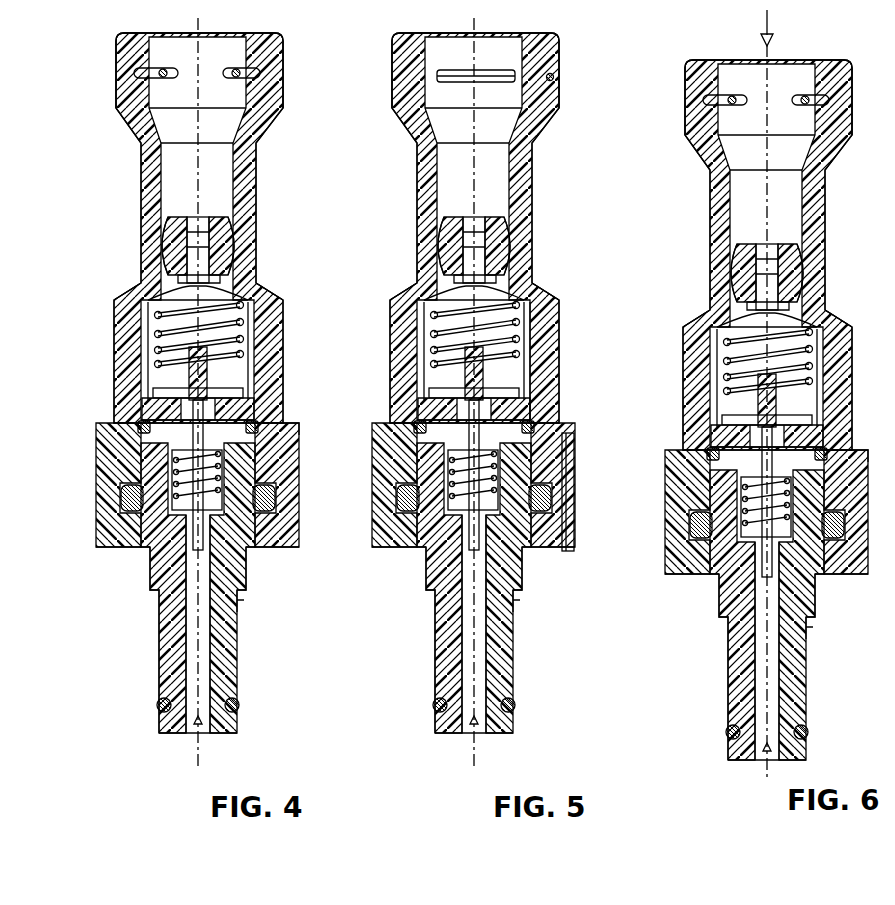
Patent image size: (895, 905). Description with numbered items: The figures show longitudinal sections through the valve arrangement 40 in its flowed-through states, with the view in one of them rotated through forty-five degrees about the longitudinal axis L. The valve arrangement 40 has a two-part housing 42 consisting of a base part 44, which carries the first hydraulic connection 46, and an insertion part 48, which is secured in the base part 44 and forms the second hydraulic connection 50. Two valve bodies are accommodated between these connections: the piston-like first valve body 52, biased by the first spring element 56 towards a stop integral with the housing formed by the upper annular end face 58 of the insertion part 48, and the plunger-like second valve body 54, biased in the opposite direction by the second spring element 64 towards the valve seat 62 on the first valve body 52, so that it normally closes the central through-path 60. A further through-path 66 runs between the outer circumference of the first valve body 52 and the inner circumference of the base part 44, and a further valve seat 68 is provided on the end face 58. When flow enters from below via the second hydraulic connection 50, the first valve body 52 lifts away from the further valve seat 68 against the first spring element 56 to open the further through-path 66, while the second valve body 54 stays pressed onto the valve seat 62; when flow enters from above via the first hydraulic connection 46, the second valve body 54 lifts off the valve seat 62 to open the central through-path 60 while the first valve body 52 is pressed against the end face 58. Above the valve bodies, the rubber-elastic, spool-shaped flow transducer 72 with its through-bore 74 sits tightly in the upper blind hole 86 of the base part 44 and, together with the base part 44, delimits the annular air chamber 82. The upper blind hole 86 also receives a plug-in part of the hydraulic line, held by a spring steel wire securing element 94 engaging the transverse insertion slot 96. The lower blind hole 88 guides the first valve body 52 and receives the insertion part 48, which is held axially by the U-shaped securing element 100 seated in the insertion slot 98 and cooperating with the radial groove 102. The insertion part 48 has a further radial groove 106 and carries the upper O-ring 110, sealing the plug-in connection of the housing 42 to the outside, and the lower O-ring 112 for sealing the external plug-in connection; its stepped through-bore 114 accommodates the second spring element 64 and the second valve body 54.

In FIG. 4, the valve arrangement 40 is at (212, 228).
In FIG. 5, the valve arrangement 40 is at (488, 228).
In FIG. 6, the valve arrangement 40 is at (784, 255).
In FIG. 4, the housing 42 is at (182, 260).
In FIG. 5, the housing 42 is at (460, 260).
In FIG. 6, the housing 42 is at (748, 288).
In FIG. 4, the base part 44 is at (183, 228).
In FIG. 5, the base part 44 is at (462, 228).
In FIG. 6, the base part 44 is at (748, 255).
In FIG. 4, the first hydraulic connection 46 is at (217, 63).
In FIG. 5, the first hydraulic connection 46 is at (493, 63).
In FIG. 6, the first hydraulic connection 46 is at (779, 76).
In FIG. 4, the insertion part 48 is at (130, 640).
In FIG. 5, the insertion part 48 is at (410, 640).
In FIG. 6, the insertion part 48 is at (699, 667).
In FIG. 4, the second hydraulic connection 50 is at (183, 741).
In FIG. 5, the second hydraulic connection 50 is at (461, 740).
In FIG. 6, the second hydraulic connection 50 is at (748, 767).
In FIG. 4, the first valve body 52 is at (155, 335).
In FIG. 5, the first valve body 52 is at (432, 335).
In FIG. 6, the first valve body 52 is at (724, 362).
In FIG. 4, the second valve body 54 is at (179, 476).
In FIG. 5, the second valve body 54 is at (460, 471).
In FIG. 6, the second valve body 54 is at (749, 512).
In FIG. 4, the first spring element 56 is at (162, 341).
In FIG. 5, the first spring element 56 is at (441, 343).
In FIG. 6, the first spring element 56 is at (729, 367).
In FIG. 4, the end face 58 is at (226, 406).
In FIG. 5, the end face 58 is at (509, 406).
In FIG. 6, the end face 58 is at (800, 433).
In FIG. 4, the central through-path 60 is at (137, 373).
In FIG. 5, the central through-path 60 is at (531, 373).
In FIG. 6, the central through-path 60 is at (707, 409).
In FIG. 4, the valve seat 62 is at (232, 379).
In FIG. 5, the valve seat 62 is at (433, 383).
In FIG. 6, the valve seat 62 is at (721, 444).
In FIG. 4, the second spring element 64 is at (184, 588).
In FIG. 5, the second spring element 64 is at (458, 588).
In FIG. 6, the second spring element 64 is at (752, 615).
In FIG. 5, the further through-path 66 is at (562, 361).
In FIG. 4, the further valve seat 68 is at (158, 447).
In FIG. 5, the further valve seat 68 is at (439, 436).
In FIG. 6, the further valve seat 68 is at (795, 426).
In FIG. 4, the flow transducer 72 is at (230, 246).
In FIG. 5, the flow transducer 72 is at (505, 246).
In FIG. 6, the flow transducer 72 is at (798, 273).
In FIG. 4, the through-bore 74 is at (188, 228).
In FIG. 5, the through-bore 74 is at (464, 228).
In FIG. 6, the through-bore 74 is at (756, 251).
In FIG. 4, the annular air chamber 82 is at (230, 246).
In FIG. 5, the annular air chamber 82 is at (474, 224).
In FIG. 6, the annular air chamber 82 is at (767, 247).
In FIG. 4, the upper blind hole 86 is at (197, 125).
In FIG. 5, the upper blind hole 86 is at (473, 125).
In FIG. 6, the upper blind hole 86 is at (766, 152).
In FIG. 4, the lower blind hole 88 is at (259, 569).
In FIG. 5, the lower blind hole 88 is at (538, 569).
In FIG. 6, the lower blind hole 88 is at (828, 595).
In FIG. 4, the securing element 94 is at (163, 58).
In FIG. 5, the securing element 94 is at (574, 64).
In FIG. 6, the securing element 94 is at (838, 81).
In FIG. 4, the insertion slot 96 is at (233, 58).
In FIG. 5, the insertion slot 96 is at (476, 60).
In FIG. 6, the insertion slot 96 is at (726, 89).
In FIG. 4, the insertion slot 98 is at (288, 497).
In FIG. 5, the insertion slot 98 is at (540, 498).
In FIG. 6, the insertion slot 98 is at (858, 518).
In FIG. 4, the securing element 100 is at (214, 530).
In FIG. 5, the securing element 100 is at (454, 543).
In FIG. 6, the securing element 100 is at (739, 545).
In FIG. 4, the radial groove 102 is at (96, 497).
In FIG. 5, the radial groove 102 is at (505, 528).
In FIG. 6, the radial groove 102 is at (663, 559).
In FIG. 4, the radial groove 106 is at (271, 606).
In FIG. 5, the radial groove 106 is at (547, 606).
In FIG. 6, the radial groove 106 is at (837, 632).
In FIG. 4, the upper O-ring 110 is at (291, 430).
In FIG. 5, the upper O-ring 110 is at (587, 484).
In FIG. 6, the upper O-ring 110 is at (861, 415).
In FIG. 4, the lower O-ring 112 is at (166, 710).
In FIG. 5, the lower O-ring 112 is at (446, 712).
In FIG. 6, the lower O-ring 112 is at (734, 735).
In FIG. 4, the stepped through-bore 114 is at (237, 566).
In FIG. 5, the stepped through-bore 114 is at (515, 566).
In FIG. 6, the stepped through-bore 114 is at (806, 593).
In FIG. 4, the longitudinal axis L is at (227, 394).
In FIG. 5, the longitudinal axis L is at (504, 394).
In FIG. 6, the longitudinal axis L is at (795, 411).